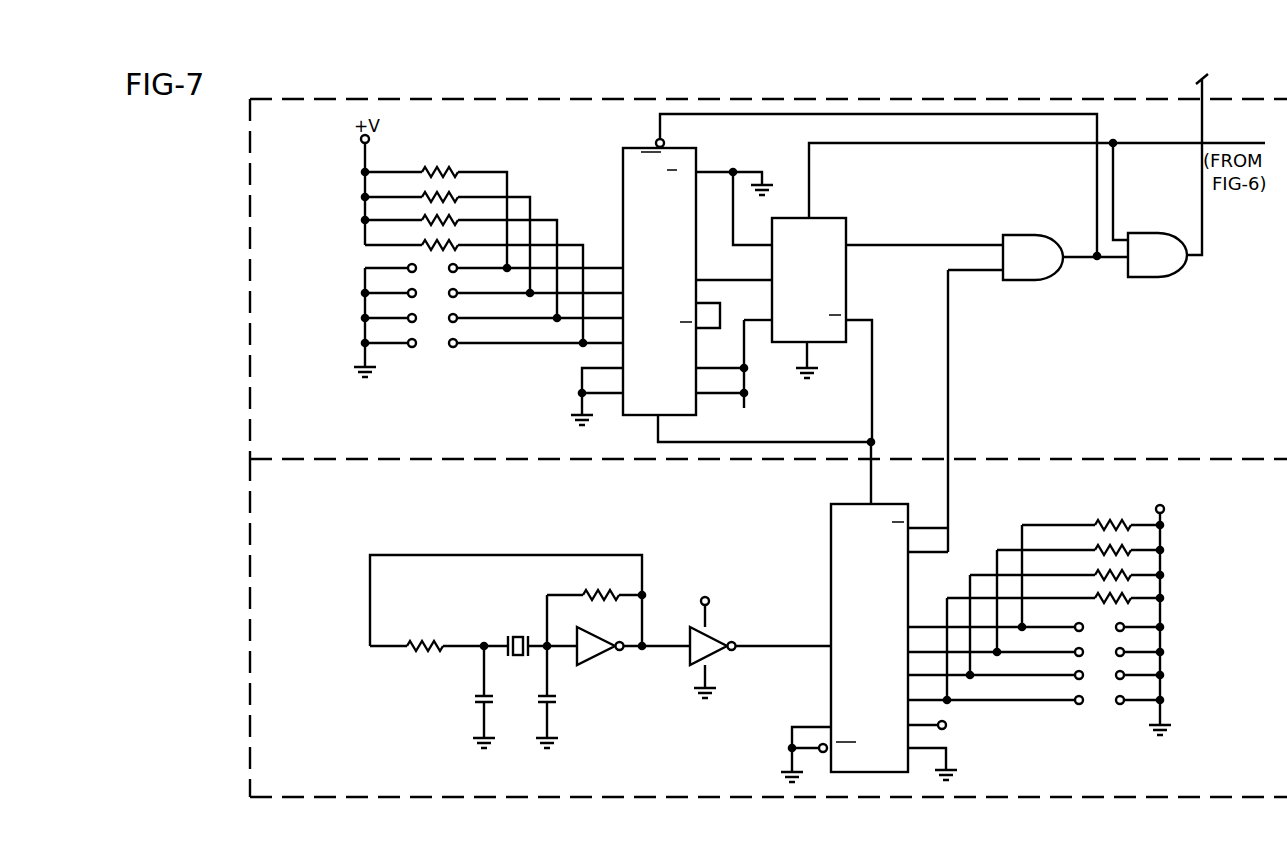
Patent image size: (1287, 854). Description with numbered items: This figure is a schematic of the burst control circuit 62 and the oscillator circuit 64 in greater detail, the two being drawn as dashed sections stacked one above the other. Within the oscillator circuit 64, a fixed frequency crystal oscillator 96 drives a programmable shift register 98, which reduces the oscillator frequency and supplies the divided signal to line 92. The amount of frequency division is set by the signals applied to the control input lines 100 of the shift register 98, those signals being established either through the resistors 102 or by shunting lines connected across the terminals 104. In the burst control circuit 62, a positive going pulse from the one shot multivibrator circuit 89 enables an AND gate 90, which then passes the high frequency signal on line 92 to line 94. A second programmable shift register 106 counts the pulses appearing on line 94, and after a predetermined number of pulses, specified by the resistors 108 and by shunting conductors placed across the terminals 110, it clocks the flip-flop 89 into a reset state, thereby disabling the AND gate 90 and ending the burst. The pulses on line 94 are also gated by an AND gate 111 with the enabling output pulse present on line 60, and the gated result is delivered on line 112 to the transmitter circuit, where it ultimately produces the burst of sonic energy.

The burst control circuit 62 is at (250, 220).
The oscillator circuit 64 is at (250, 527).
The line 60 is at (1032, 146).
The one shot multivibrator circuit 89 is at (830, 218).
The AND gate 90 is at (1022, 235).
The line 92 is at (948, 391).
The line 94 is at (1071, 259).
The fixed frequency crystal oscillator 96 is at (655, 548).
The programmable shift register 98 is at (831, 546).
The control input lines 100 is at (938, 632).
The resistors 102 is at (1112, 522).
The terminals 104 is at (1101, 692).
The programmable shift register 106 is at (622, 160).
The resistors 108 is at (444, 163).
The terminals 110 is at (434, 332).
The AND gate 111 is at (1168, 268).
The line 112 is at (1202, 110).